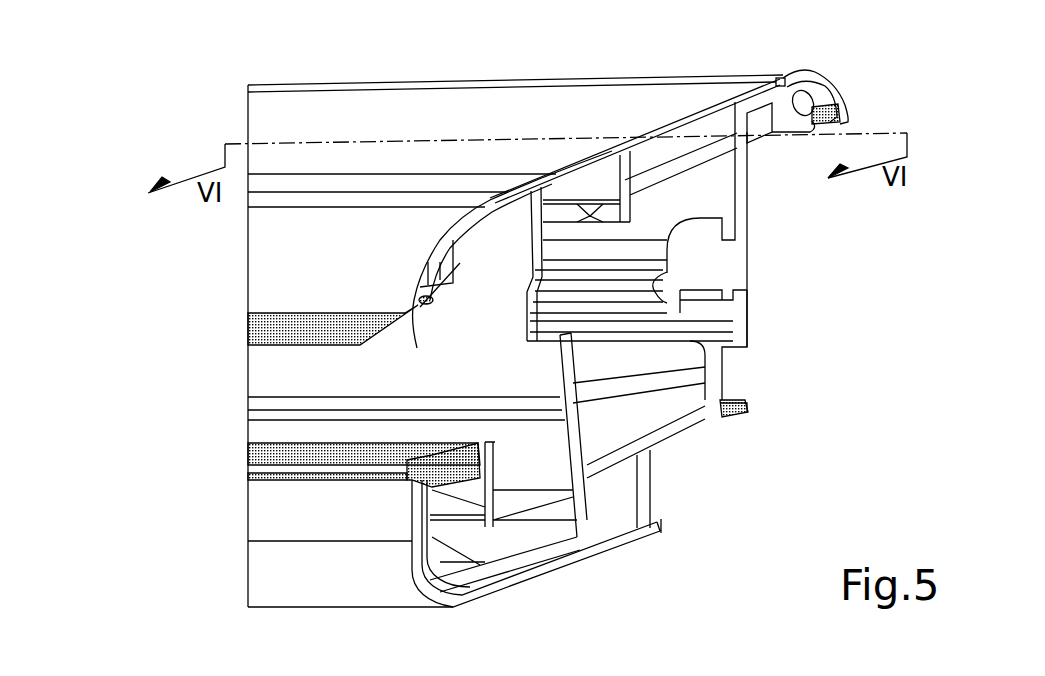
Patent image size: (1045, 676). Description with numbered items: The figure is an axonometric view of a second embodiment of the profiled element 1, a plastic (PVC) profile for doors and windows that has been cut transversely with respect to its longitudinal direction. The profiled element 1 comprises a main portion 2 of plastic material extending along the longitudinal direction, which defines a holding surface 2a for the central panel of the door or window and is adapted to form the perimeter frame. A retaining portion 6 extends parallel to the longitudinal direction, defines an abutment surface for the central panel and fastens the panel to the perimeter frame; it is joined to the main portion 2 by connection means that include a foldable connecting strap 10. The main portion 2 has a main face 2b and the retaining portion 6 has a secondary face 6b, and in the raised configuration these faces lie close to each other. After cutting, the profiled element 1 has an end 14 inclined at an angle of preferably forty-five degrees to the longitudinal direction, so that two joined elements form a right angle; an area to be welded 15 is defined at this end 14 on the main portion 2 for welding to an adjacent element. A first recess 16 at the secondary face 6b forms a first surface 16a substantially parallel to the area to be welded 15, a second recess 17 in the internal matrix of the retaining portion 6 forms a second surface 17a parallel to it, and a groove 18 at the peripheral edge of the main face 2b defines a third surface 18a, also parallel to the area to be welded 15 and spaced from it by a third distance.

The profiled element 1 is at (93, 65).
The main portion 2 is at (747, 440).
The holding surface 2a is at (497, 450).
The main face 2b is at (271, 110).
The retaining portion 6 is at (230, 292).
The secondary face 6b is at (270, 243).
The connecting strap 10 is at (356, 182).
The end 14 is at (615, 133).
The area to be welded 15 is at (747, 183).
The first recess 16 is at (424, 306).
The first surface 16a is at (455, 228).
The second recess 17 is at (548, 337).
The second surface 17a is at (483, 243).
The groove 18 is at (786, 79).
The third surface 18a is at (742, 98).